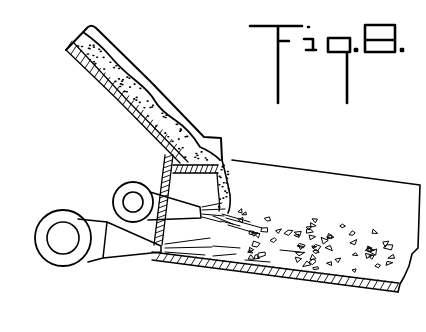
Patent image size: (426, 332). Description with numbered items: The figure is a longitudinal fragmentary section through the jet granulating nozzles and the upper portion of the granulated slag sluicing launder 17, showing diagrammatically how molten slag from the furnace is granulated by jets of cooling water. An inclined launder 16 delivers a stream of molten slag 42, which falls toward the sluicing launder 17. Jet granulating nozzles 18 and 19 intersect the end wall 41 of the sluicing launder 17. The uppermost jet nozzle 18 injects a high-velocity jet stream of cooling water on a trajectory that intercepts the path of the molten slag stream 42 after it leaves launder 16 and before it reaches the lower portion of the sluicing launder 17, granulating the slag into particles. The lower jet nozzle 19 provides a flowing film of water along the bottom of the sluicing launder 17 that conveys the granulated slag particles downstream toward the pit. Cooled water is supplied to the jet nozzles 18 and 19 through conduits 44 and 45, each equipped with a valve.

The launder 16 is at (89, 74).
The granulated slag sluicing launder 17 is at (353, 188).
The jet granulating nozzle 18 is at (180, 210).
The jet granulating nozzle 19 is at (132, 246).
The end wall 41 is at (162, 191).
The molten slag stream 42 is at (224, 172).
The conduit 44 is at (120, 197).
The conduit 45 is at (60, 262).